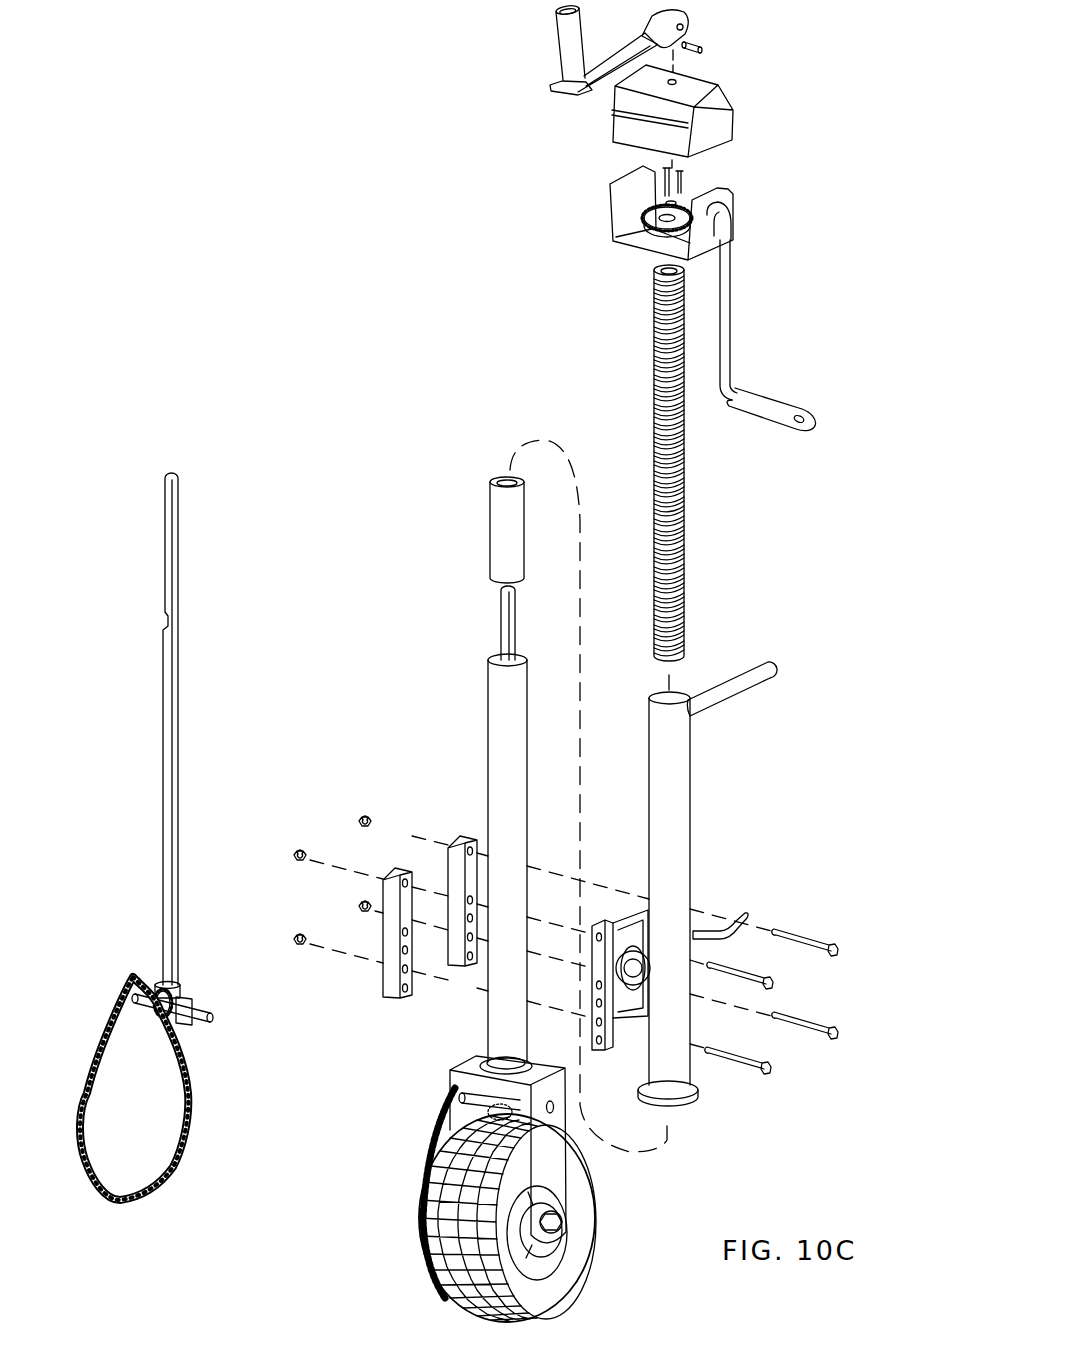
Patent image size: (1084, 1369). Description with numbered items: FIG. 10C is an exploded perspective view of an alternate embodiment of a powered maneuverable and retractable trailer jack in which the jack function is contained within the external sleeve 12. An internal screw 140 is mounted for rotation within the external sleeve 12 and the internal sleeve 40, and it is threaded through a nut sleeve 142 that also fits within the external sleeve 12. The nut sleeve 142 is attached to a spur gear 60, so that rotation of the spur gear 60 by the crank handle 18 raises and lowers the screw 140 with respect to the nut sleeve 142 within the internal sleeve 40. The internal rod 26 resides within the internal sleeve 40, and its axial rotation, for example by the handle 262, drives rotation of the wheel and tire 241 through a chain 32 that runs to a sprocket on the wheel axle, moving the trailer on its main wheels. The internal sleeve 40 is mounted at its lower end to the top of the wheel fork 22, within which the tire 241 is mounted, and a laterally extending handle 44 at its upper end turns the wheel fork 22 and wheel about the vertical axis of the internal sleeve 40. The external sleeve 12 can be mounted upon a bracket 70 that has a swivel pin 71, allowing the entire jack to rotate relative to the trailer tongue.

The handle 262 is at (597, 88).
The spur gear 60 is at (643, 241).
The handle 18 is at (727, 342).
The internal screw 140 is at (686, 470).
The nut sleeve 142 is at (510, 528).
The internal rod 26 is at (510, 621).
The internal sleeve 40 is at (495, 716).
The laterally extending handle 44 is at (748, 680).
The external sleeve 12 is at (680, 824).
The swivel pin 71 is at (628, 970).
The bracket 70 is at (623, 1036).
The chain 32 is at (440, 1152).
The wheel fork 22 is at (556, 1165).
The tire 241 is at (548, 1287).